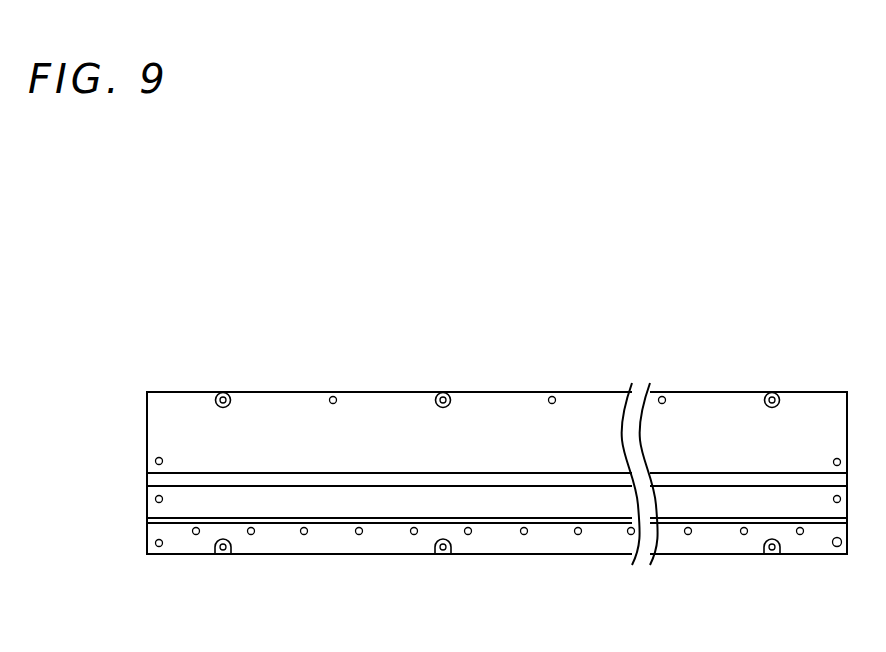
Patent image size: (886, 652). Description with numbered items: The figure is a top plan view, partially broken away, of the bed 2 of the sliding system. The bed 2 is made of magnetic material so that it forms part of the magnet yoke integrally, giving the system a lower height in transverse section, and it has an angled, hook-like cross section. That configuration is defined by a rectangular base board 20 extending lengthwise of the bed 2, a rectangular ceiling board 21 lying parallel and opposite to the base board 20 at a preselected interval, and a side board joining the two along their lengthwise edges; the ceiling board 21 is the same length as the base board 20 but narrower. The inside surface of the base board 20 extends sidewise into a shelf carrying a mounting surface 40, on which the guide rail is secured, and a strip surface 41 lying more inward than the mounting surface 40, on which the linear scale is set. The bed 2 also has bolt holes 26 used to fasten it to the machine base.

The bed 2 is at (698, 387).
The ceiling board 21 is at (384, 425).
The base board 20 is at (485, 503).
The mounting surface 40 is at (552, 545).
The strip surface 41 is at (603, 507).
The bolt holes 26 is at (225, 392).